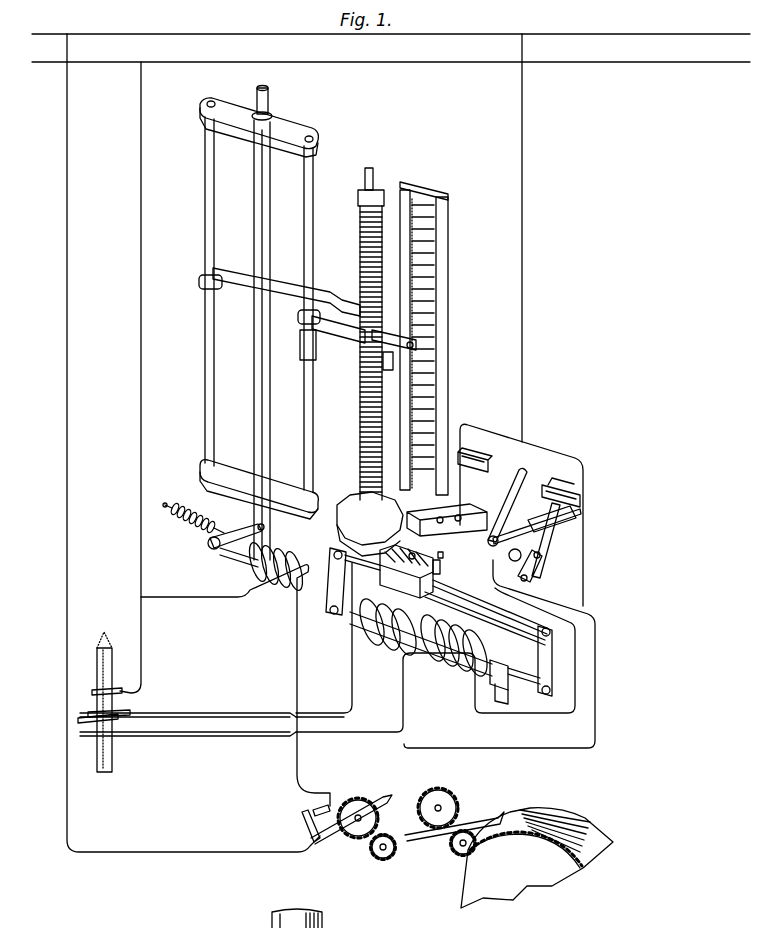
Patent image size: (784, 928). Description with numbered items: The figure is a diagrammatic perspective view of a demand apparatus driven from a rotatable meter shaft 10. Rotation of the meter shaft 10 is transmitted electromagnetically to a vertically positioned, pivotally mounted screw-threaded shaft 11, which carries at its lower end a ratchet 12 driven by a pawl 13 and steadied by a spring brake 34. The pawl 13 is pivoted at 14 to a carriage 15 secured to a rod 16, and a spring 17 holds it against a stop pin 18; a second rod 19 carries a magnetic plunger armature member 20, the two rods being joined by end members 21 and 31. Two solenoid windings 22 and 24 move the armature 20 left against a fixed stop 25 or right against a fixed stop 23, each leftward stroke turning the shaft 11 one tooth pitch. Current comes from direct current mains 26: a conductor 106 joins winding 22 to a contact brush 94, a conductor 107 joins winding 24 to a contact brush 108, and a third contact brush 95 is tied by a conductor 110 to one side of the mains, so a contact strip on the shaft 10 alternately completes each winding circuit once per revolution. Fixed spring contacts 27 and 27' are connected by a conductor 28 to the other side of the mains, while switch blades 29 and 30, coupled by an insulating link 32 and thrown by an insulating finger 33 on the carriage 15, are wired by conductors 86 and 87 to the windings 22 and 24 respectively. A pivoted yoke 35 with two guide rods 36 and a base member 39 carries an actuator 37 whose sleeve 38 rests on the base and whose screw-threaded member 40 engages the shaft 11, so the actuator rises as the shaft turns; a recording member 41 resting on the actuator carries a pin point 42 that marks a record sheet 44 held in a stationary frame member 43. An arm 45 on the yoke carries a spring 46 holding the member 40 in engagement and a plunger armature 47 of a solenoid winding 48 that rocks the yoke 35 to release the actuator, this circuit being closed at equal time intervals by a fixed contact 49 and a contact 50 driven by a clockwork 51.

The meter shaft 10 is at (114, 762).
The screw-threaded shaft 11 is at (360, 228).
The ratchet 12 is at (352, 496).
The pawl 13 is at (392, 556).
The pivot 14 is at (443, 554).
The carriage 15 is at (447, 583).
The rod 16 is at (446, 596).
The spring 17 is at (425, 550).
The stop pin 18 is at (442, 566).
The second rod 19 is at (518, 673).
The magnetic plunger armature member 20 is at (496, 660).
The end member 21 is at (549, 660).
The solenoid winding 22 is at (392, 650).
The fixed stop 23 is at (505, 696).
The solenoid winding 24 is at (460, 676).
The fixed stop 25 is at (352, 650).
The direct current mains 26 is at (483, 34).
The fixed spring contact 27 is at (555, 480).
The fixed spring contact 27' is at (475, 449).
The conductor 28 is at (522, 295).
The switch blade 29 is at (545, 537).
The switch blade 30 is at (505, 505).
The end member 31 is at (328, 615).
The link 32 is at (545, 565).
The finger 33 is at (535, 525).
The spring brake 34 is at (432, 510).
The yoke 35 is at (292, 125).
The guide rods 36 is at (313, 181).
The actuator 37 is at (340, 346).
The sleeve 38 is at (300, 356).
The base member 39 is at (300, 482).
The screw-threaded member 40 is at (388, 371).
The recording member 41 is at (331, 293).
The pin point 42 is at (420, 343).
The stationary frame member 43 is at (448, 292).
The record sheet 44 is at (440, 198).
The arm 45 is at (232, 524).
The spring 46 is at (186, 508).
The magnetic plunger armature 47 is at (240, 566).
The solenoid winding 48 is at (276, 590).
The fixed contact 49 is at (312, 808).
The time-actuated contact 50 is at (300, 823).
The clockwork 51 is at (590, 858).
The conductor 86 is at (596, 712).
The conductor 87 is at (568, 715).
The contact brush 94 is at (130, 710).
The contact brush 95 is at (118, 688).
The conductor 106 is at (220, 712).
The conductor 107 is at (226, 738).
The contact brush 108 is at (90, 715).
The conductor 110 is at (141, 366).